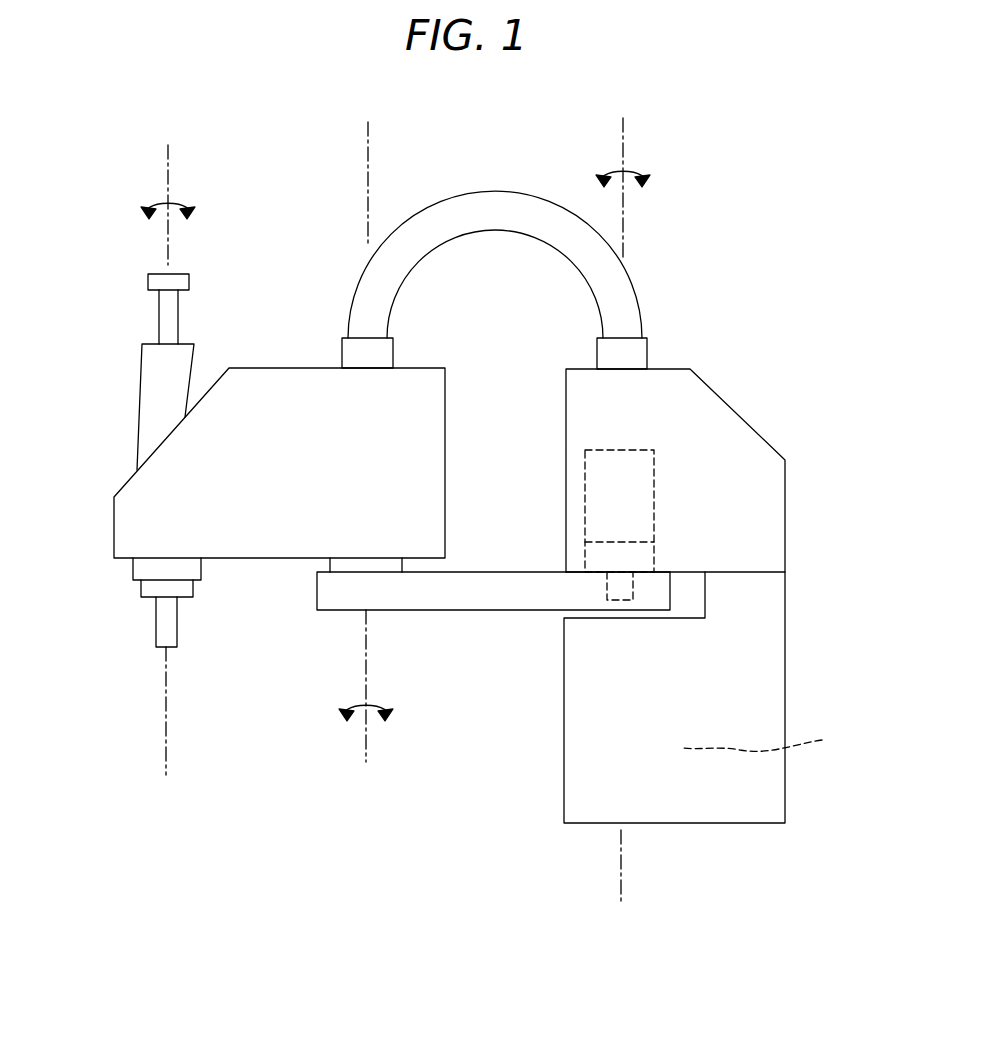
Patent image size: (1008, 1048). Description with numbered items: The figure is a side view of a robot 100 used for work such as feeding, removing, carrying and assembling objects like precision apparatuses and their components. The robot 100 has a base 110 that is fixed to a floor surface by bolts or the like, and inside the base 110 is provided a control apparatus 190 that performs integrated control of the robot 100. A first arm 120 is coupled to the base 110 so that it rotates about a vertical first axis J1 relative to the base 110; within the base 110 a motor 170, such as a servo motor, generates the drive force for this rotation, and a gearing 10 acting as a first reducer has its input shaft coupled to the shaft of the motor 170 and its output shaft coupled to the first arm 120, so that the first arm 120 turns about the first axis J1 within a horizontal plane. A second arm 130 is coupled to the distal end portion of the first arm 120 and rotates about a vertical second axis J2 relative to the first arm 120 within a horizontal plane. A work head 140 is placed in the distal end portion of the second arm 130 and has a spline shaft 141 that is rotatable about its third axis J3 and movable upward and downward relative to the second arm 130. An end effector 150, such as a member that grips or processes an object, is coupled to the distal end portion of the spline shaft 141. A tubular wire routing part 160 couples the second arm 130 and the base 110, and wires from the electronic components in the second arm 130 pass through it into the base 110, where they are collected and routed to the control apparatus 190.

The robot 100 is at (695, 152).
The base 110 is at (800, 688).
The first arm 120 is at (440, 625).
The second arm 130 is at (460, 392).
The work head 140 is at (127, 387).
The spline shaft 141 is at (163, 311).
The end effector 150 is at (156, 625).
The wire routing part 160 is at (470, 200).
The motor 170 is at (585, 500).
The gearing 10 is at (585, 560).
The control apparatus 190 is at (773, 740).
The first axis J1 is at (622, 140).
The second axis J2 is at (368, 738).
The third axis J3 is at (170, 172).